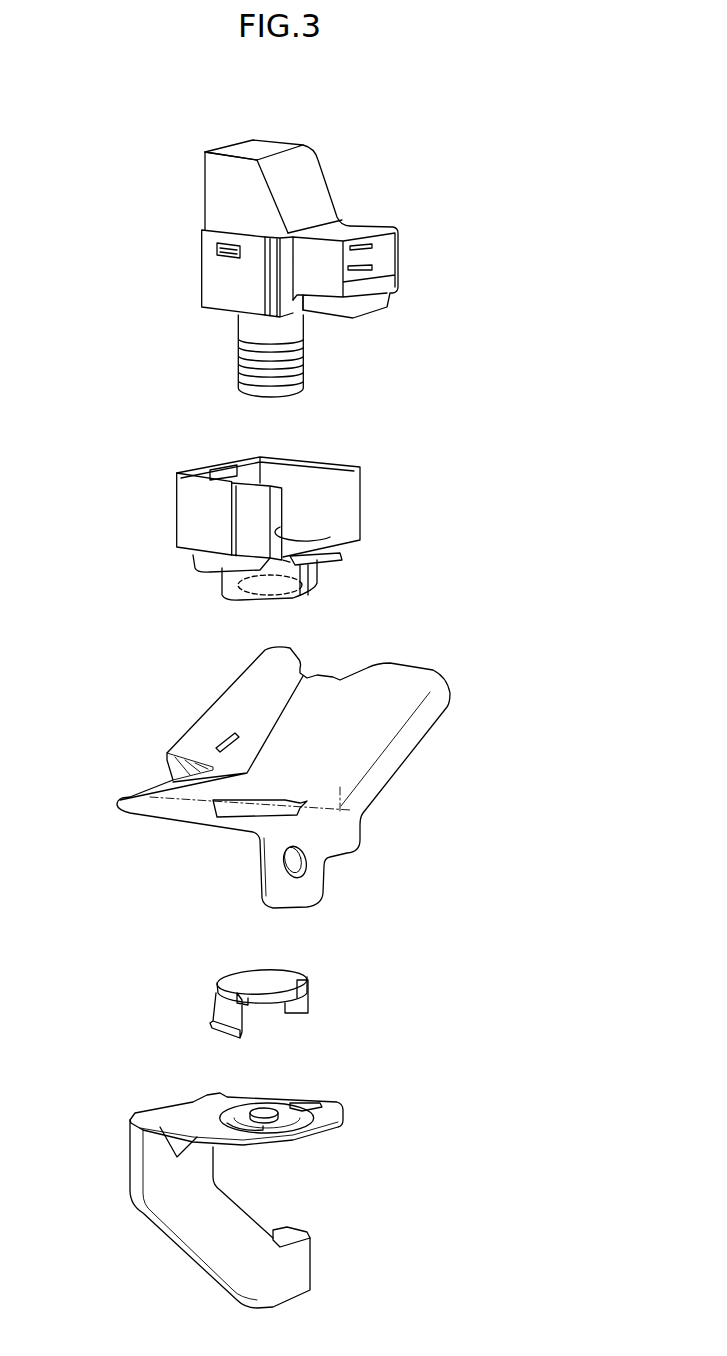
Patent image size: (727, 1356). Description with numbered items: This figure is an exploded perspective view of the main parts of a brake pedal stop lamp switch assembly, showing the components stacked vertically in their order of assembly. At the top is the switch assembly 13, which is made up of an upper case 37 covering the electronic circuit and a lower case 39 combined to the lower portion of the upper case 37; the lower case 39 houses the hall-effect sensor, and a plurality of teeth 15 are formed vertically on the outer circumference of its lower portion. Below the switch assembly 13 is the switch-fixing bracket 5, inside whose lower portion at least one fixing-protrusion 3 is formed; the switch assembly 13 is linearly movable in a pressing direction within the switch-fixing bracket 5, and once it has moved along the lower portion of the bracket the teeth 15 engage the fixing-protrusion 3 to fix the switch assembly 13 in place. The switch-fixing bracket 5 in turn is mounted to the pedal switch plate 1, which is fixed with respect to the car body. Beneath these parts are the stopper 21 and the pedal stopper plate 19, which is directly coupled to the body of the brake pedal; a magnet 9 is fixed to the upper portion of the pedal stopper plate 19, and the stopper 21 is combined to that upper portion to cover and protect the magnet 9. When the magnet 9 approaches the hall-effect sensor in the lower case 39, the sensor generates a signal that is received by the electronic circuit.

The pedal switch plate 1 is at (425, 707).
The fixing-protrusion 3 is at (300, 583).
The switch-fixing bracket 5 is at (175, 508).
The magnet 9 is at (263, 1107).
The switch assembly 13 is at (93, 192).
The teeth 15 is at (303, 363).
The pedal stopper plate 19 is at (277, 1273).
The stopper 21 is at (308, 992).
The upper case 37 is at (220, 195).
The lower case 39 is at (220, 280).